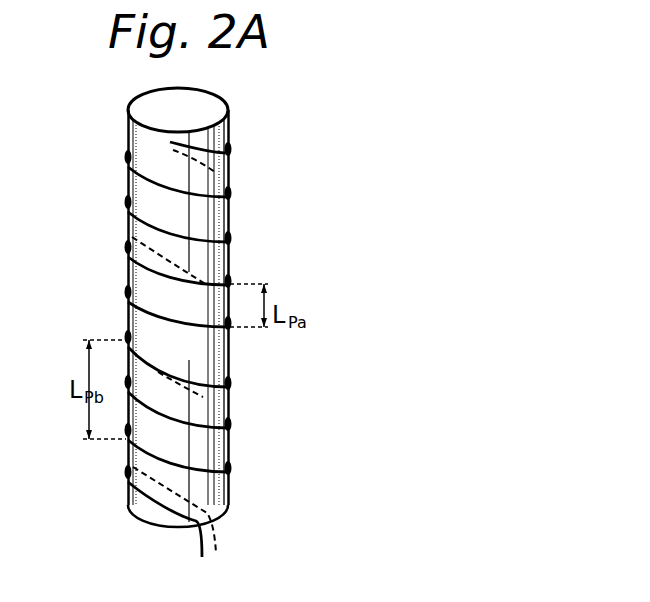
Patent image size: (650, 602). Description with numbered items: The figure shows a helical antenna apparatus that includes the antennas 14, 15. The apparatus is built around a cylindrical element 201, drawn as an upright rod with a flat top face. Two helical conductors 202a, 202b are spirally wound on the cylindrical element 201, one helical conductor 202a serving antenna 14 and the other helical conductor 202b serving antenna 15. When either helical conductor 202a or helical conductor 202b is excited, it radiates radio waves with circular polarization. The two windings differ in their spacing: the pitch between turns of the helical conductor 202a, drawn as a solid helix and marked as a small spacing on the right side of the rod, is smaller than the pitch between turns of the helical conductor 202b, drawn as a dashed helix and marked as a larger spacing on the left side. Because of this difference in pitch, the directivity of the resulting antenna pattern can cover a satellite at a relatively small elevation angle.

The cylindrical element 201 is at (212, 103).
The helical conductor 202a is at (130, 191).
The helical conductor 202b is at (203, 396).
The antenna 14 is at (304, 215).
The antenna 15 is at (185, 321).